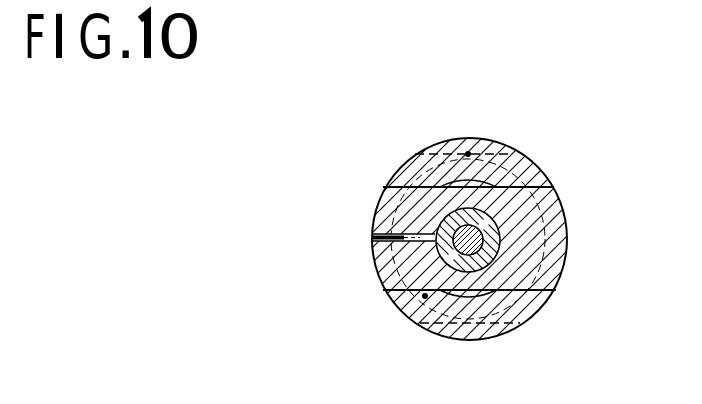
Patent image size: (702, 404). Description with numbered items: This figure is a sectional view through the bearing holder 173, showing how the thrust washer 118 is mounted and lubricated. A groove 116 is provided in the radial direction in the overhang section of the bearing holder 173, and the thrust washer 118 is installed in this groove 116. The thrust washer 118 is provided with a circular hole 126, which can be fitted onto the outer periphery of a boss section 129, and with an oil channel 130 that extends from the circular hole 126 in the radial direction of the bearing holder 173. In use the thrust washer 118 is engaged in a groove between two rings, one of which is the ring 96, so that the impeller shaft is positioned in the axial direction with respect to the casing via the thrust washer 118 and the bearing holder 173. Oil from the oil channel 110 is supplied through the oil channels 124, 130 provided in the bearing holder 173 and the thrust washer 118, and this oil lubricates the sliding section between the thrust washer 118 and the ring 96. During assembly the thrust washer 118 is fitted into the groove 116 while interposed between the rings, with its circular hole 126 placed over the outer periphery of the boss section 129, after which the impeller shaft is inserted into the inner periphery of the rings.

The ring 96 is at (505, 223).
The oil channel 110 is at (467, 152).
The groove 116 is at (531, 288).
The thrust washer 118 is at (424, 298).
The oil channel 124 is at (397, 224).
The circular hole 126 is at (477, 301).
The boss section 129 is at (500, 213).
The oil channel 130 is at (400, 246).
The bearing holder 173 is at (488, 130).